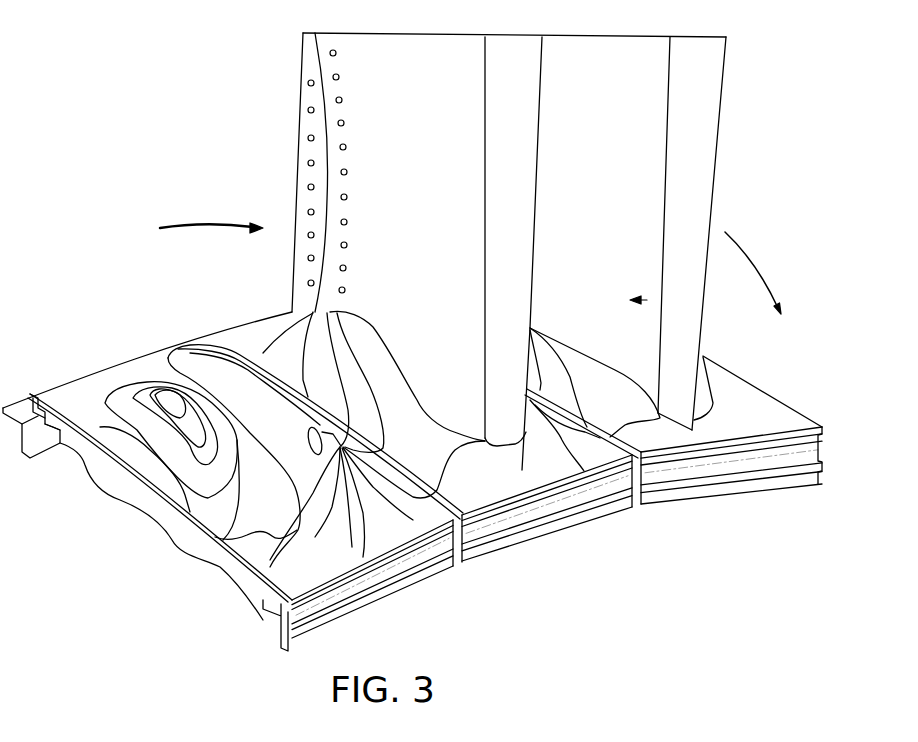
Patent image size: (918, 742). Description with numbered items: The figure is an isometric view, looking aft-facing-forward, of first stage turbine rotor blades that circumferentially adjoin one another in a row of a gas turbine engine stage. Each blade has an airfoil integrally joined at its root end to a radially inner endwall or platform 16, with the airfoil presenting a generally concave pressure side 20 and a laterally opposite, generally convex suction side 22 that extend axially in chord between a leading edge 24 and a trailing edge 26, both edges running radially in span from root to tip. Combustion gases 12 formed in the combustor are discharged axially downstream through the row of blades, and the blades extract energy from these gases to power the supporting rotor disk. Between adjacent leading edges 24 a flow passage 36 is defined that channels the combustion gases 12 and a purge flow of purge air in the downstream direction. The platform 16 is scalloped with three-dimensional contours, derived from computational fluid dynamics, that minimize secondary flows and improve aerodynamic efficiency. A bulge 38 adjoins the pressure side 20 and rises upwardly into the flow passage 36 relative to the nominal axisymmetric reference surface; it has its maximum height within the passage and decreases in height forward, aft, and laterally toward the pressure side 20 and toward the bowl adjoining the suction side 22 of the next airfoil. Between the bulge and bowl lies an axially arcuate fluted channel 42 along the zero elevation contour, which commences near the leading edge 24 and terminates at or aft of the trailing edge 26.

The combustion gases 12 is at (207, 218).
The platform 16 is at (412, 461).
The pressure side 20 is at (422, 196).
The suction side 22 is at (685, 233).
The leading edge 24 is at (327, 125).
The trailing edge 26 is at (665, 183).
The flow passage 36 is at (647, 300).
The bulge 38 is at (330, 310).
The fluted channel 42 is at (460, 532).